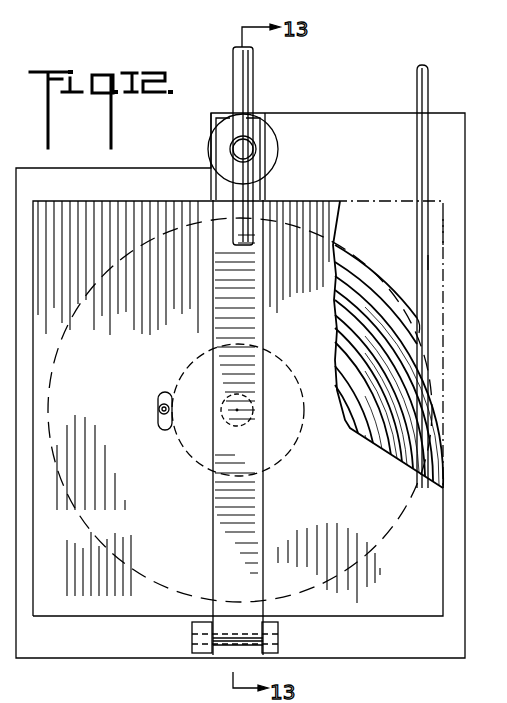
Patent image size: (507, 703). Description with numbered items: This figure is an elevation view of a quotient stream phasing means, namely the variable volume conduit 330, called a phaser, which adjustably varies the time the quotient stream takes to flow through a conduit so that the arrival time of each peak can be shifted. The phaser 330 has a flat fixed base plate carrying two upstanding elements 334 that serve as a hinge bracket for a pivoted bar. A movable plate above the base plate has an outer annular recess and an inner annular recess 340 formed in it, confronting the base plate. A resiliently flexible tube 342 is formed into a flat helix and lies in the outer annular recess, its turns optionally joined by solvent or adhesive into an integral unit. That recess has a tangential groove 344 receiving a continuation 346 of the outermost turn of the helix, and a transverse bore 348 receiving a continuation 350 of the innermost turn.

The variable volume conduit 330 is at (463, 93).
The upstanding elements 334 is at (197, 653).
The inner annular recess 340 is at (475, 230).
The resiliently flexible tube 342 is at (400, 373).
The tangential groove 344 is at (430, 262).
The continuation of the outermost turn 346 is at (419, 150).
The transverse bore 348 is at (165, 433).
The continuation of the innermost turn 350 is at (157, 407).